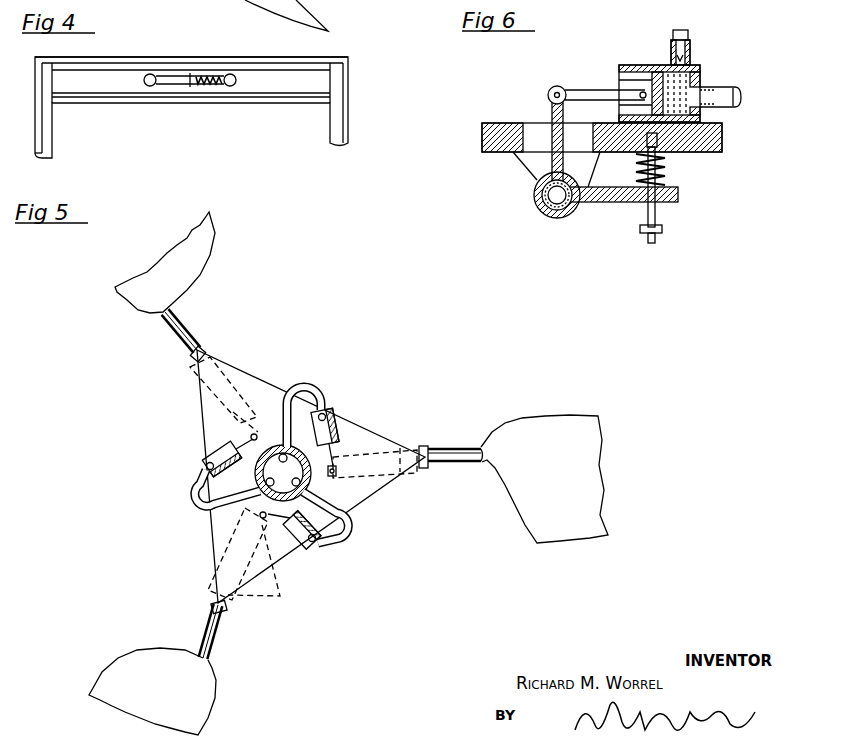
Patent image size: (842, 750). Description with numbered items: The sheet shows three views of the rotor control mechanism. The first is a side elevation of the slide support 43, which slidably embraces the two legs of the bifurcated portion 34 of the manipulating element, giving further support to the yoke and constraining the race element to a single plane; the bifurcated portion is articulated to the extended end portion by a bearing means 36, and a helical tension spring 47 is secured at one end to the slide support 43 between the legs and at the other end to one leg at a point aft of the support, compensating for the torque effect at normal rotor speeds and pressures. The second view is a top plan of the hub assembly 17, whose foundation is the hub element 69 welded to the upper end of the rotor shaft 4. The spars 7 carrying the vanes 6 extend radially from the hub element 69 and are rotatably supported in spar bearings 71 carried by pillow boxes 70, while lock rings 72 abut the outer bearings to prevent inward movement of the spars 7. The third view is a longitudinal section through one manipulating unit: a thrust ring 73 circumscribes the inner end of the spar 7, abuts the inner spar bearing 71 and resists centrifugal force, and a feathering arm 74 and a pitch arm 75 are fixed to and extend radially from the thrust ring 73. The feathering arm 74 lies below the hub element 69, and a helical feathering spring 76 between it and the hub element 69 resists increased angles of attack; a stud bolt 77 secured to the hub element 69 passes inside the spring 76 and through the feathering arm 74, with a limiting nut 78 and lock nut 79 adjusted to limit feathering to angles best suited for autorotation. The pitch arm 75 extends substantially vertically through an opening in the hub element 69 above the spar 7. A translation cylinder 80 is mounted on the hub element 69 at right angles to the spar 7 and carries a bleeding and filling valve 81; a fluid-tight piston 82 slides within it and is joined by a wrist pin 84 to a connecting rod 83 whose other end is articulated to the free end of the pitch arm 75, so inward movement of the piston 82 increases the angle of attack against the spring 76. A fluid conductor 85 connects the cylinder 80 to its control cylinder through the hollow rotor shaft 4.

In FIG. 5, the rotor shaft 4 is at (275, 447).
In FIG. 5, the vanes 6 is at (210, 253).
In FIG. 6, the spars 7 is at (540, 200).
In FIG. 5, the spars 7 is at (180, 333).
In FIG. 5, the hub assembly 17 is at (393, 350).
In FIG. 4, the bifurcated portion 34 is at (150, 82).
In FIG. 4, the bearing means 36 is at (186, 70).
In FIG. 4, the slide support 43 is at (343, 105).
In FIG. 4, the helical tension spring 47 is at (208, 93).
In FIG. 6, the hub element 69 is at (722, 148).
In FIG. 5, the hub element 69 is at (333, 423).
In FIG. 6, the pillow boxes 70 is at (530, 168).
In FIG. 5, the spar bearings 71 is at (385, 452).
In FIG. 5, the lock rings 72 is at (429, 466).
In FIG. 6, the thrust rings 73 is at (548, 218).
In FIG. 5, the thrust rings 73 is at (331, 479).
In FIG. 6, the feathering arms 74 is at (611, 203).
In FIG. 6, the pitch arms 75 is at (552, 115).
In FIG. 6, the helical feathering springs 76 is at (667, 168).
In FIG. 6, the stud bolts 77 is at (656, 214).
In FIG. 6, the limiting nuts 78 is at (662, 230).
In FIG. 6, the lock nuts 79 is at (656, 238).
In FIG. 6, the translation cylinders 80 is at (700, 68).
In FIG. 5, the translation cylinders 80 is at (331, 415).
In FIG. 6, the bleeding and filling valves 81 is at (689, 45).
In FIG. 5, the bleeding and filling valves 81 is at (324, 410).
In FIG. 6, the pistons 82 is at (652, 70).
In FIG. 6, the connecting rods 83 is at (592, 90).
In FIG. 5, the connecting rods 83 is at (334, 451).
In FIG. 6, the wrist pins 84 is at (640, 101).
In FIG. 6, the fluid conductors 85 is at (733, 92).
In FIG. 5, the fluid conductors 85 is at (300, 388).